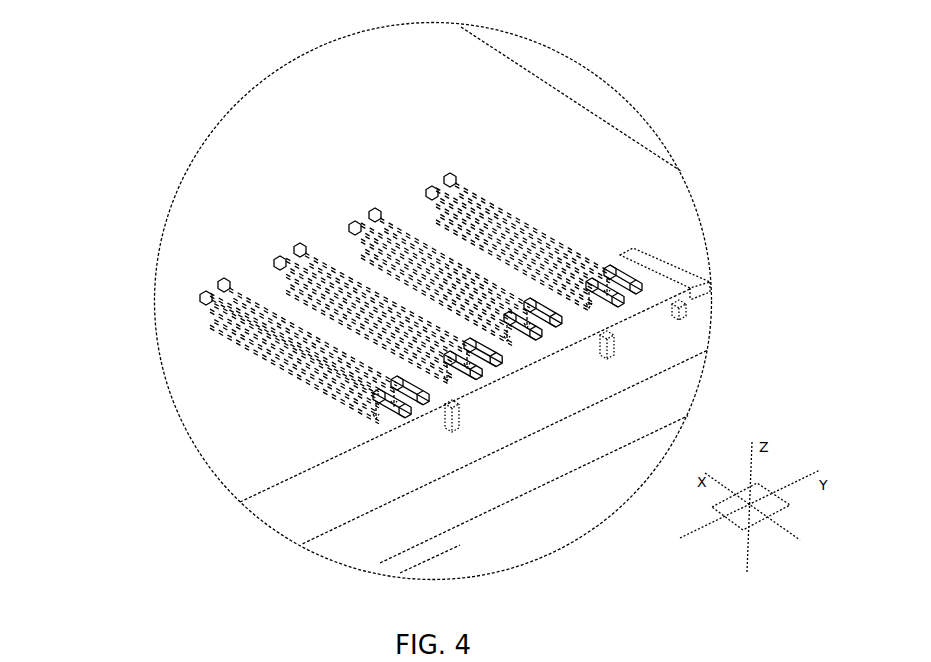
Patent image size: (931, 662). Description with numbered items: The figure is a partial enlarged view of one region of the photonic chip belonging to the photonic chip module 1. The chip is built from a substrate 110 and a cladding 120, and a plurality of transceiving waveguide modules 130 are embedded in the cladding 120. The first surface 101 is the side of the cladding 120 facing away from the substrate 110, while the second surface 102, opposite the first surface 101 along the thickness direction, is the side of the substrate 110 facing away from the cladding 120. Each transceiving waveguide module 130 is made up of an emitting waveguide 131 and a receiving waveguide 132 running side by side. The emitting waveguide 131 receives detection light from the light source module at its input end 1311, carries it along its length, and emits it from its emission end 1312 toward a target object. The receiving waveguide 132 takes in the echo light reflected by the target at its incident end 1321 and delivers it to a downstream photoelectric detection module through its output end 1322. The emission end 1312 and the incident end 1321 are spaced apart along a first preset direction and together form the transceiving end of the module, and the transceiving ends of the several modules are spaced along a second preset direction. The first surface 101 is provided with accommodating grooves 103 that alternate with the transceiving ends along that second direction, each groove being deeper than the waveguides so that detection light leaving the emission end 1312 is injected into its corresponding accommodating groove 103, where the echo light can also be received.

The photonic chip module 1 is at (75, 41).
The first surface 101 is at (242, 470).
The second surface 102 is at (380, 563).
The accommodating groove 103 is at (453, 433).
The substrate 110 is at (512, 506).
The cladding 120 is at (377, 494).
The transceiving waveguide module 130 is at (403, 297).
The emitting waveguide 131 is at (262, 300).
The receiving waveguide 132 is at (224, 318).
The input end 1311 is at (297, 244).
The emission end 1312 is at (490, 368).
The incident end 1321 is at (484, 378).
The output end 1322 is at (280, 258).